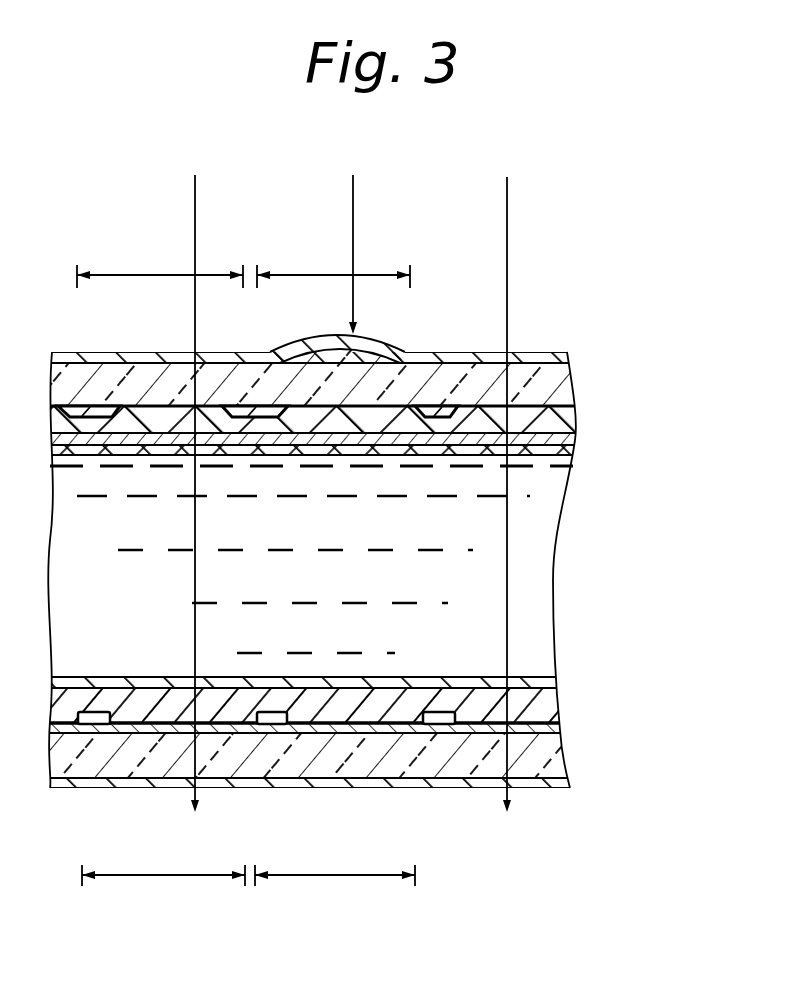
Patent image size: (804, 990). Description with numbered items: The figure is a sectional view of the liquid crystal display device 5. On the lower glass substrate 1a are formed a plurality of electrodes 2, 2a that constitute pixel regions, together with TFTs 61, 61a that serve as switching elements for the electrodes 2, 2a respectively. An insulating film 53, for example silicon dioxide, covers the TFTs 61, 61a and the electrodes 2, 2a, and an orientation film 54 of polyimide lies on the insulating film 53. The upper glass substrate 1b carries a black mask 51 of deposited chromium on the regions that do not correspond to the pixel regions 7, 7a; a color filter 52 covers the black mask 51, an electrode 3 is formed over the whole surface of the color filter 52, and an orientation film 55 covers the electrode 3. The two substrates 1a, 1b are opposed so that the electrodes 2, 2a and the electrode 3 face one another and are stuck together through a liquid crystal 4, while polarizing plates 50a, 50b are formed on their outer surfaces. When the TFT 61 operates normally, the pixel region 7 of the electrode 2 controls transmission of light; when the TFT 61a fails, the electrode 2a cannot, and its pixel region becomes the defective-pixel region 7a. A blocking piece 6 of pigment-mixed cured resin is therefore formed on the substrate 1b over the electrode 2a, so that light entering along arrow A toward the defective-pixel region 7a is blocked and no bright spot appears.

The liquid crystal display device 5 is at (552, 218).
The arrow A is at (507, 222).
The pixel region 7 is at (128, 275).
The defective-pixel region 7a is at (303, 275).
The black mask 51 is at (98, 410).
The blocking piece 6 is at (372, 356).
The polarizing plate 50a is at (548, 352).
The substrate 1b is at (556, 380).
The color filter 52 is at (560, 418).
The electrode 3 is at (572, 440).
The orientation film 55 is at (573, 466).
The liquid crystal 4 is at (537, 552).
The orientation film 54 is at (548, 682).
The insulating film 53 is at (550, 707).
The electrode 2 is at (57, 733).
The electrode 2a is at (378, 726).
The TFT 61 is at (93, 738).
The TFT 61a is at (270, 738).
The substrate 1a is at (553, 752).
The polarizing plate 50b is at (568, 782).